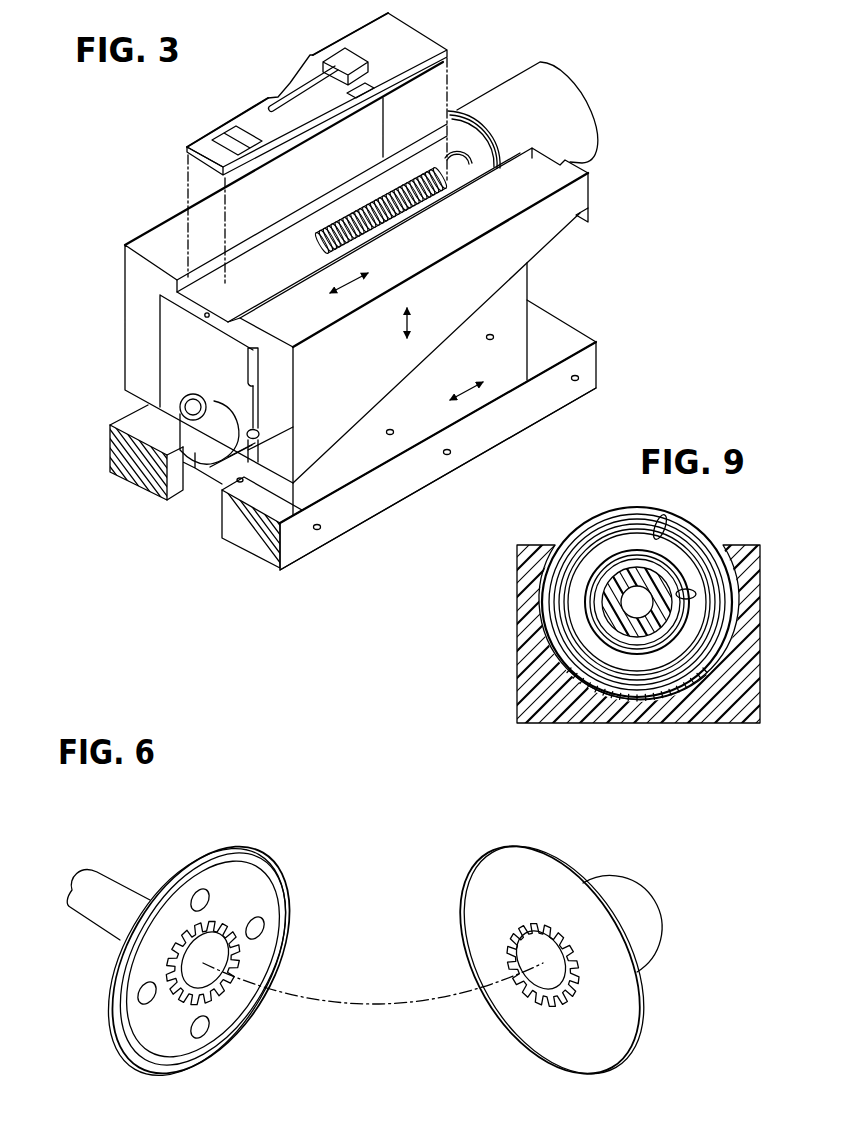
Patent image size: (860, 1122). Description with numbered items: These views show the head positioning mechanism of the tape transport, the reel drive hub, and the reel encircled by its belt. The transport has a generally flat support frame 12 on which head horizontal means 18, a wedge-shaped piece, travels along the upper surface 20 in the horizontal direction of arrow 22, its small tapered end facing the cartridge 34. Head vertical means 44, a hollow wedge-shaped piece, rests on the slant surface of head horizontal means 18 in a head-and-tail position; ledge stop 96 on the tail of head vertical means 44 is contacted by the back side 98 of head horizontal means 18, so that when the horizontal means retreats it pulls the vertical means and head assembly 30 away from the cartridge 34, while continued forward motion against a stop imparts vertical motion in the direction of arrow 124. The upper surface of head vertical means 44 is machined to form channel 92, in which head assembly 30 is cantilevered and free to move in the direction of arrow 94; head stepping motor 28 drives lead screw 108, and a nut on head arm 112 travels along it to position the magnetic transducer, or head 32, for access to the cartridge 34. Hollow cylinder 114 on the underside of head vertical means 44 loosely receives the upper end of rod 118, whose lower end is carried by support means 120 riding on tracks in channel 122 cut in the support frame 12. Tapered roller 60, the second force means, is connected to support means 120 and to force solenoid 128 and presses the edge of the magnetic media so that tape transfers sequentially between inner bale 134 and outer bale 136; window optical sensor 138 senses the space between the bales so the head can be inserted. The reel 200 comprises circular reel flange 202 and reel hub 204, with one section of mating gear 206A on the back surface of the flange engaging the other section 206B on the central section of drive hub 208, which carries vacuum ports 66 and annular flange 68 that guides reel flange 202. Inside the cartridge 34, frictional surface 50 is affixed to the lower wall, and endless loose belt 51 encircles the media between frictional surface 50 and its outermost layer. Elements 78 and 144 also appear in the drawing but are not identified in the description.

In FIG. 3, the support frame 12 is at (112, 457).
In FIG. 3, the head horizontal means 18 is at (503, 378).
In FIG. 3, the upper surface 20 is at (298, 547).
In FIG. 3, the arrow 22 is at (470, 382).
In FIG. 3, the head stepping motor 28 is at (588, 118).
In FIG. 3, the head assembly 30 is at (255, 115).
In FIG. 3, the magnetic transducer (head) 32 is at (210, 150).
In FIG. 9, the cartridge 34 is at (520, 670).
In FIG. 3, the head vertical means 44 is at (528, 240).
In FIG. 9, the frictional surface 50 is at (661, 705).
In FIG. 9, the endless loose belt 51 is at (605, 508).
In FIG. 3, the tapered roller (second force means) 60 is at (188, 427).
In FIG. 6, the vacuum ports 66 is at (206, 892).
In FIG. 6, the annular flange 68 is at (268, 892).
In FIG. 6, the shaft 78 is at (101, 880).
In FIG. 3, the channel 92 is at (200, 279).
In FIG. 3, the arrow 94 is at (350, 280).
In FIG. 3, the ledge stop 96 is at (590, 213).
In FIG. 3, the back side 98 is at (527, 288).
In FIG. 3, the lead screw 108 is at (425, 200).
In FIG. 3, the head arm 112 is at (407, 42).
In FIG. 3, the hollow cylinder 114 is at (259, 372).
In FIG. 3, the rod 118 is at (259, 403).
In FIG. 3, the support means 120 is at (247, 448).
In FIG. 3, the channel 122 is at (183, 490).
In FIG. 3, the arrow 124 is at (412, 320).
In FIG. 3, the force solenoid 128 is at (244, 478).
In FIG. 9, the inner bale 134 is at (695, 589).
In FIG. 9, the outer bale 136 is at (668, 516).
In FIG. 3, the window optical sensor 138 is at (205, 319).
In FIG. 3, the switch block 144 is at (337, 60).
In FIG. 6, the reel 200 is at (684, 891).
In FIG. 6, the reel flange 202 is at (548, 858).
In FIG. 9, the reel hub 204 is at (637, 602).
In FIG. 6, the reel hub 204 is at (633, 888).
In FIG. 6, the mating gear section 206A is at (510, 951).
In FIG. 6, the mating gear section 206B is at (220, 985).
In FIG. 6, the drive hub 208 is at (205, 855).